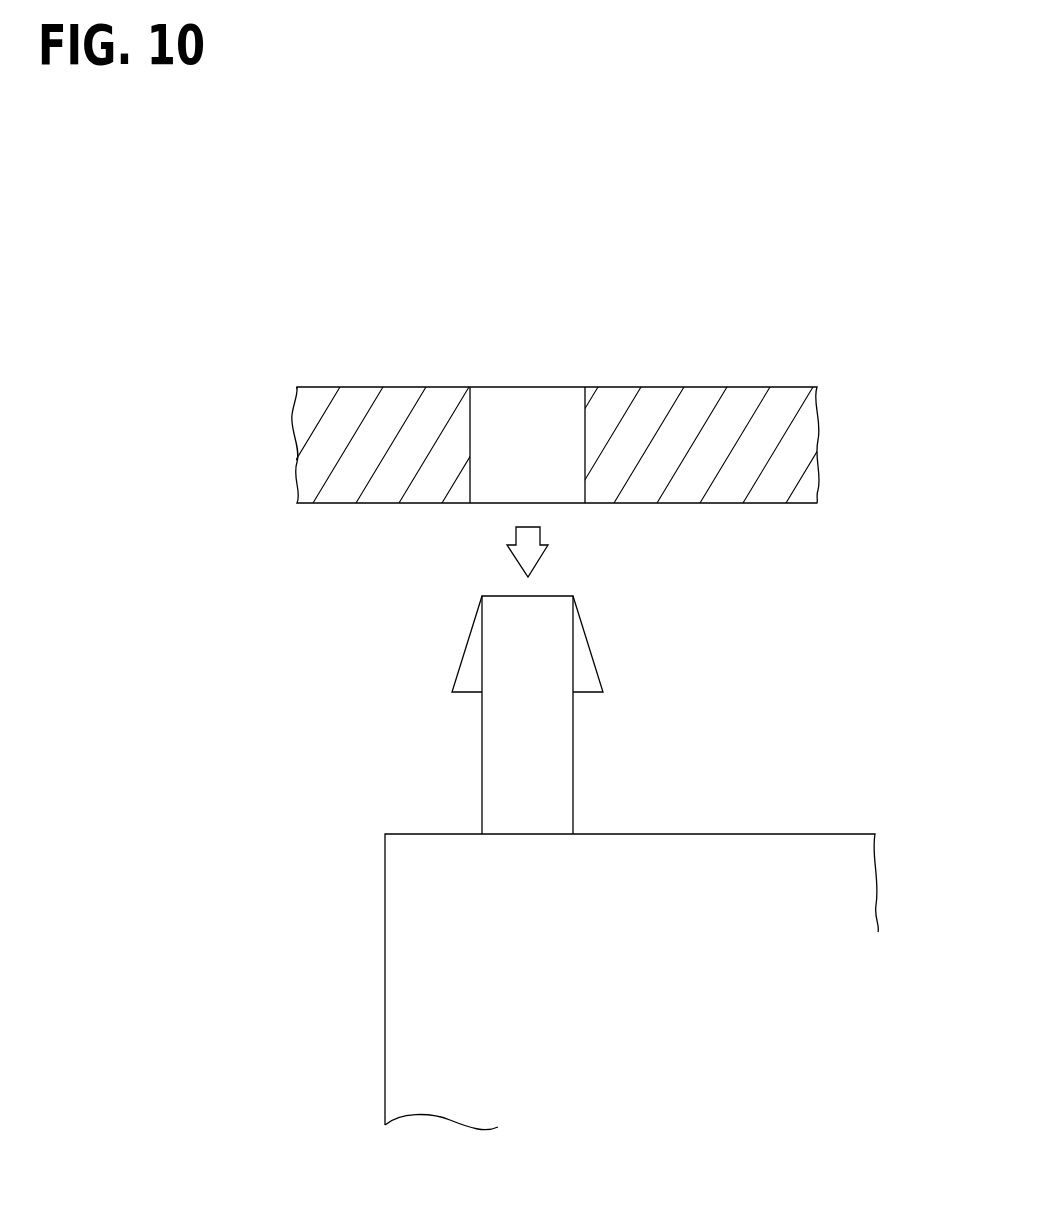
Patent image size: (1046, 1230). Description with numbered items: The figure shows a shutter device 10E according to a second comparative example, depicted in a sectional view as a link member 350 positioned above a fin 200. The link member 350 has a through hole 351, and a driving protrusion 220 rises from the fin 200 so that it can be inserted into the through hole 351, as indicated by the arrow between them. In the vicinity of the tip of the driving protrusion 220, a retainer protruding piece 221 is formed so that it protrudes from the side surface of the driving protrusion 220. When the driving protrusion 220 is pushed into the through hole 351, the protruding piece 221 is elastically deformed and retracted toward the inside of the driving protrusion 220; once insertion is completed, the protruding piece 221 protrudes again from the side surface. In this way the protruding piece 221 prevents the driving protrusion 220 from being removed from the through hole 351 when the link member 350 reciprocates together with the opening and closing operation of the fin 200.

The shutter device 10E is at (216, 347).
The link member 350 is at (738, 387).
The through hole 351 is at (473, 420).
The driving protrusion 220 is at (574, 759).
The retainer protruding piece 221 is at (594, 655).
The fin 200 is at (743, 833).